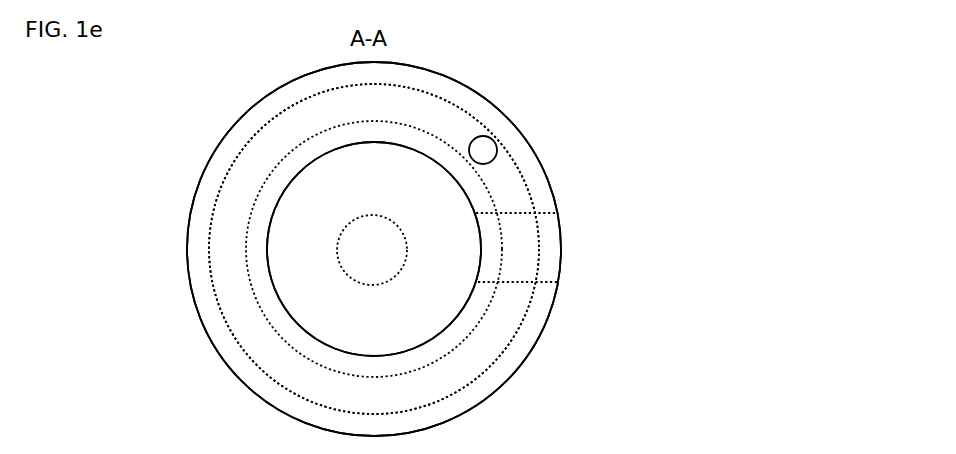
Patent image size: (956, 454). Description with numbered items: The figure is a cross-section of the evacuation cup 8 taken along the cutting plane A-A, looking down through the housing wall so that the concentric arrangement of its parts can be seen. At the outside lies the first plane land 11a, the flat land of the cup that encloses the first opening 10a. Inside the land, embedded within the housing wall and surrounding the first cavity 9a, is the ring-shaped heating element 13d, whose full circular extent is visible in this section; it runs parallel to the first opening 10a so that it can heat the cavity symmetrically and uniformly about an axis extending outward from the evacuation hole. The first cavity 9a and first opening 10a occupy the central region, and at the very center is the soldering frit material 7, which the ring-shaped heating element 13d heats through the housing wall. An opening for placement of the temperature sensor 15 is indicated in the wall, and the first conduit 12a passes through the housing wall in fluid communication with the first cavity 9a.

The evacuation cup 8 is at (490, 65).
The first plane land 11a is at (233, 137).
The ring-shaped heating element 13d is at (512, 193).
The temperature sensor 15 is at (490, 152).
The first cavity 9a is at (374, 249).
The first opening 10a is at (374, 249).
The soldering frit material 7 is at (372, 250).
The first conduit 12a is at (558, 213).